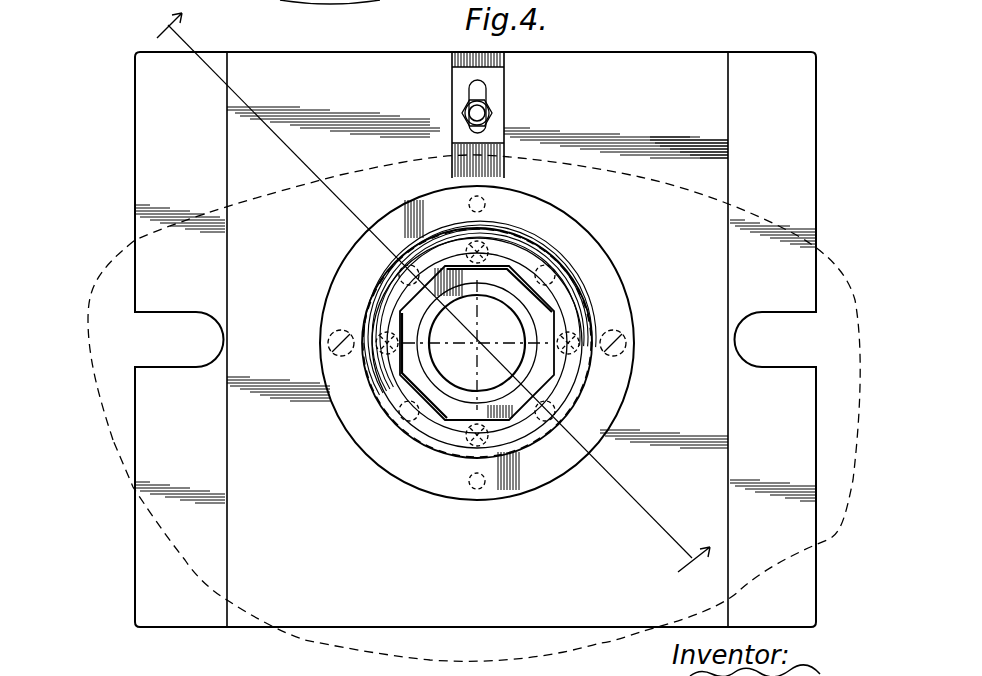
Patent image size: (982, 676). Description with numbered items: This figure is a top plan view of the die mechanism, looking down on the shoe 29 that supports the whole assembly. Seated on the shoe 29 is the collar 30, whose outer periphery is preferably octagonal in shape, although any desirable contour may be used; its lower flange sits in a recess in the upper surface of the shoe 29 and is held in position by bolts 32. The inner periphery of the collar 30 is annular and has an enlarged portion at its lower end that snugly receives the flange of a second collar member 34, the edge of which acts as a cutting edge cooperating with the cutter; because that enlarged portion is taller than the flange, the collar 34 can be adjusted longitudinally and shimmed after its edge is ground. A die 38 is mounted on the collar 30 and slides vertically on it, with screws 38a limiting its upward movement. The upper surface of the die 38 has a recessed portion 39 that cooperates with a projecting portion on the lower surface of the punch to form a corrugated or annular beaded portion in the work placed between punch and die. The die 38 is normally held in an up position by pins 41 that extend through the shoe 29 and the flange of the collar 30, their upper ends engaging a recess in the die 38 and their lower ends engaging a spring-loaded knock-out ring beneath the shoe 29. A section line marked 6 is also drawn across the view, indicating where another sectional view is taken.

The shoe 29 is at (698, 111).
The collar 30 is at (540, 287).
The bolts 32 is at (477, 345).
The second collar member 34 is at (502, 292).
The die 38 is at (612, 383).
The screws 38a is at (326, 340).
The recessed portion 39 is at (570, 299).
The pins 41 is at (398, 273).
The section line 6- 6 is at (429, 298).